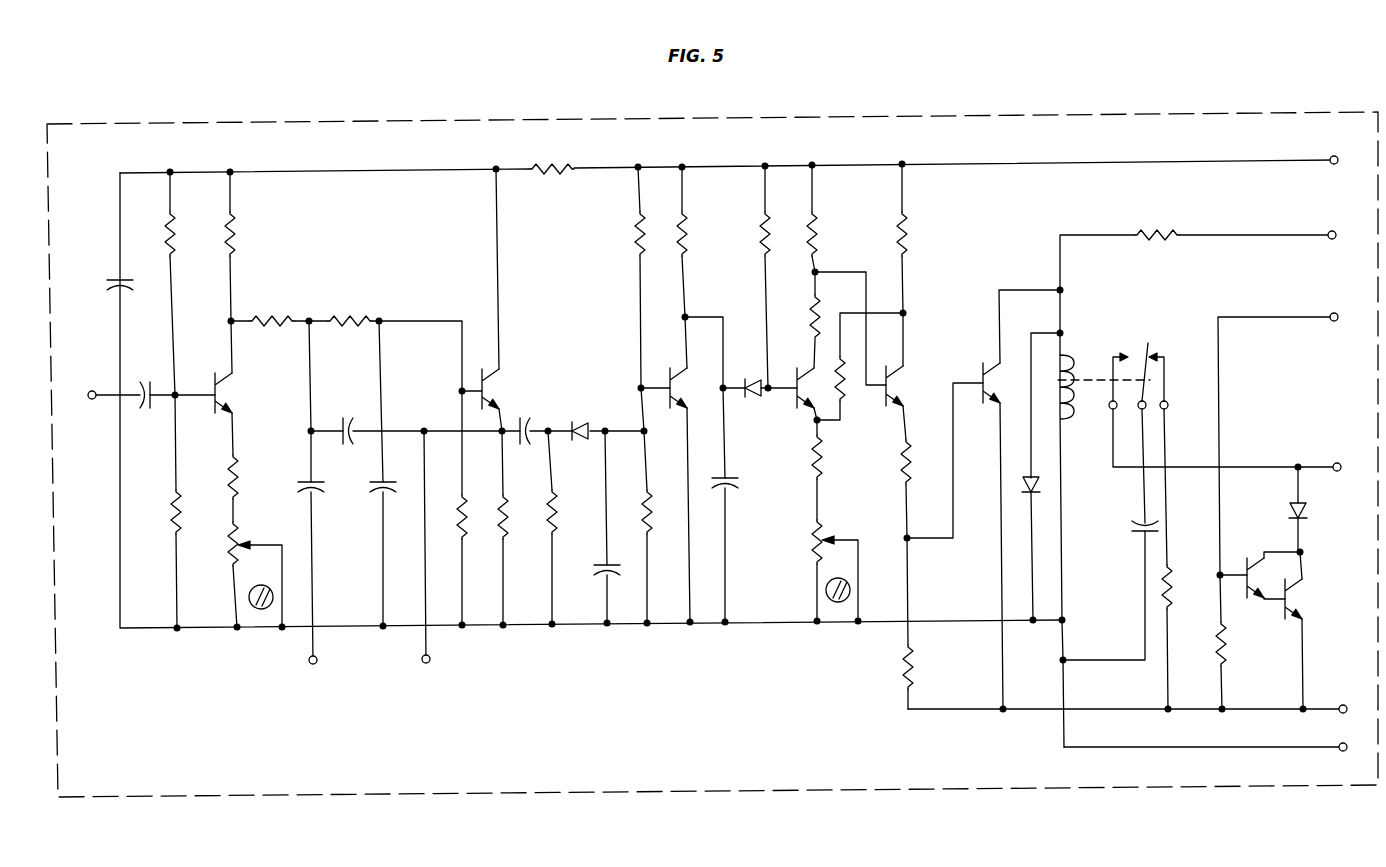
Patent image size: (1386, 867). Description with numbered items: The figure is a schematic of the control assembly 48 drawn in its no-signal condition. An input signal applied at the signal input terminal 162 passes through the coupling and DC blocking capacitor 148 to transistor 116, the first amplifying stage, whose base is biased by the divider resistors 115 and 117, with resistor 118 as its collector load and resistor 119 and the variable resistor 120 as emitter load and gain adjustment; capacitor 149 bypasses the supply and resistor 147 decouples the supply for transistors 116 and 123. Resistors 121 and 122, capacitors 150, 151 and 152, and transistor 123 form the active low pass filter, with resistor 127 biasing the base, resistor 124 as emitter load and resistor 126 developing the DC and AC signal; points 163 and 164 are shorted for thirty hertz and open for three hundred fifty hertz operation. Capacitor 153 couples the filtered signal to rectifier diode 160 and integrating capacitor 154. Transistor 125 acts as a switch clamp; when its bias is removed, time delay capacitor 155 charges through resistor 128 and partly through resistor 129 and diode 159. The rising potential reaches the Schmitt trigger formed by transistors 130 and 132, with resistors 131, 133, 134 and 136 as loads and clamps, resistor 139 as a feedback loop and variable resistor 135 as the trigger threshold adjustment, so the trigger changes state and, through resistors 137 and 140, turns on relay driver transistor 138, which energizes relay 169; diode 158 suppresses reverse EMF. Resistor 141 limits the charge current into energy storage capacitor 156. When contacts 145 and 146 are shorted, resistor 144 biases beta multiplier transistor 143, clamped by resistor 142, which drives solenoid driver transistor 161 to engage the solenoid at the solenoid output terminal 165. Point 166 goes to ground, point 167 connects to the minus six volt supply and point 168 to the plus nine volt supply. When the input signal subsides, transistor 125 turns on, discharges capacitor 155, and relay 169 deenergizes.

The control assembly 48 is at (447, 116).
The resistor 115 is at (176, 233).
The transistor 116 is at (222, 392).
The resistor 117 is at (179, 501).
The resistor 118 is at (238, 232).
The resistor 119 is at (239, 466).
The variable resistor 120 is at (230, 550).
The resistor 121 is at (272, 318).
The resistor 122 is at (355, 318).
The transistor 123 is at (490, 398).
The resistor 124 is at (506, 533).
The transistor 125 is at (673, 383).
The resistor 126 is at (557, 511).
The resistor 127 is at (637, 233).
The resistor 128 is at (687, 232).
The resistor 129 is at (760, 222).
The transistor 130 is at (795, 396).
The resistor 131 is at (817, 233).
The transistor 132 is at (891, 372).
The resistor 133 is at (811, 310).
The resistor 134 is at (822, 458).
The variable resistor 135 is at (815, 536).
The resistor 136 is at (907, 233).
The resistor 137 is at (902, 452).
The transistor 138 is at (990, 368).
The resistor 139 is at (846, 396).
The resistor 140 is at (912, 672).
The resistor 141 is at (1169, 572).
The resistor 142 is at (1216, 654).
The transistor 143 is at (1246, 560).
The resistor 144 is at (1160, 228).
The contact 145 is at (1332, 231).
The contact 146 is at (1334, 313).
The resistor 147 is at (570, 156).
The capacitor 148 is at (148, 388).
The capacitor 149 is at (116, 278).
The capacitor 150 is at (343, 420).
The capacitor 151 is at (377, 488).
The capacitor 152 is at (305, 488).
The capacitor 153 is at (523, 441).
The capacitor 154 is at (605, 562).
The time delay capacitor 155 is at (732, 477).
The energy storage capacitor 156 is at (1133, 536).
The diode 158 is at (1030, 498).
The diode 159 is at (746, 398).
The diode 160 is at (582, 418).
The transistor 161 is at (1292, 596).
The signal input terminal 162 is at (92, 391).
The point 163 is at (313, 664).
The point 164 is at (428, 663).
The solenoid output terminal 165 is at (1337, 463).
The ground point 166 is at (1345, 743).
The power supply connection 167 is at (1343, 703).
The power supply connection 168 is at (1337, 156).
The relay 169 is at (1070, 360).